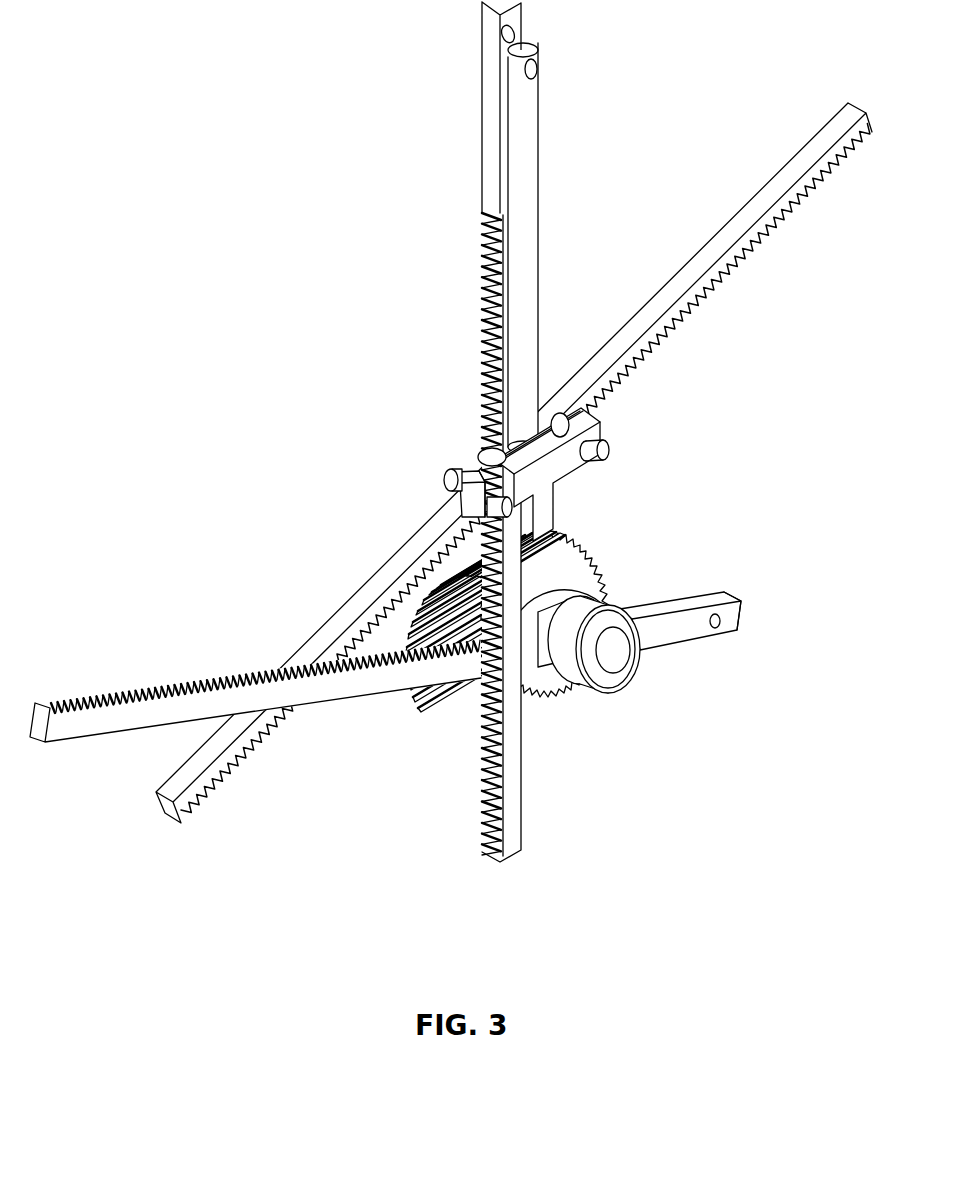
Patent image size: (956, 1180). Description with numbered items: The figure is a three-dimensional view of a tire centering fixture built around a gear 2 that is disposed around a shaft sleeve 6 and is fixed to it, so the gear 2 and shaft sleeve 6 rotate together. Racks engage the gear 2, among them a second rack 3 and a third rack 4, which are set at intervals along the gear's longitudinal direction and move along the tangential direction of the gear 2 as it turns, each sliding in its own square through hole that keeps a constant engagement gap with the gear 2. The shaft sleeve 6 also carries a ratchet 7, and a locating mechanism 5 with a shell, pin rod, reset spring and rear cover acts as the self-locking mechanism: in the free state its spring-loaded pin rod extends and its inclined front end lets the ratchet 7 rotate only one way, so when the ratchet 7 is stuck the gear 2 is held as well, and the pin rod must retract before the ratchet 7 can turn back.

The gear 2 is at (443, 560).
The second rack 3 is at (625, 367).
The third rack 4 is at (680, 627).
The locating mechanism 5 is at (458, 483).
The shaft sleeve 6 is at (605, 615).
The ratchet 7 is at (418, 607).